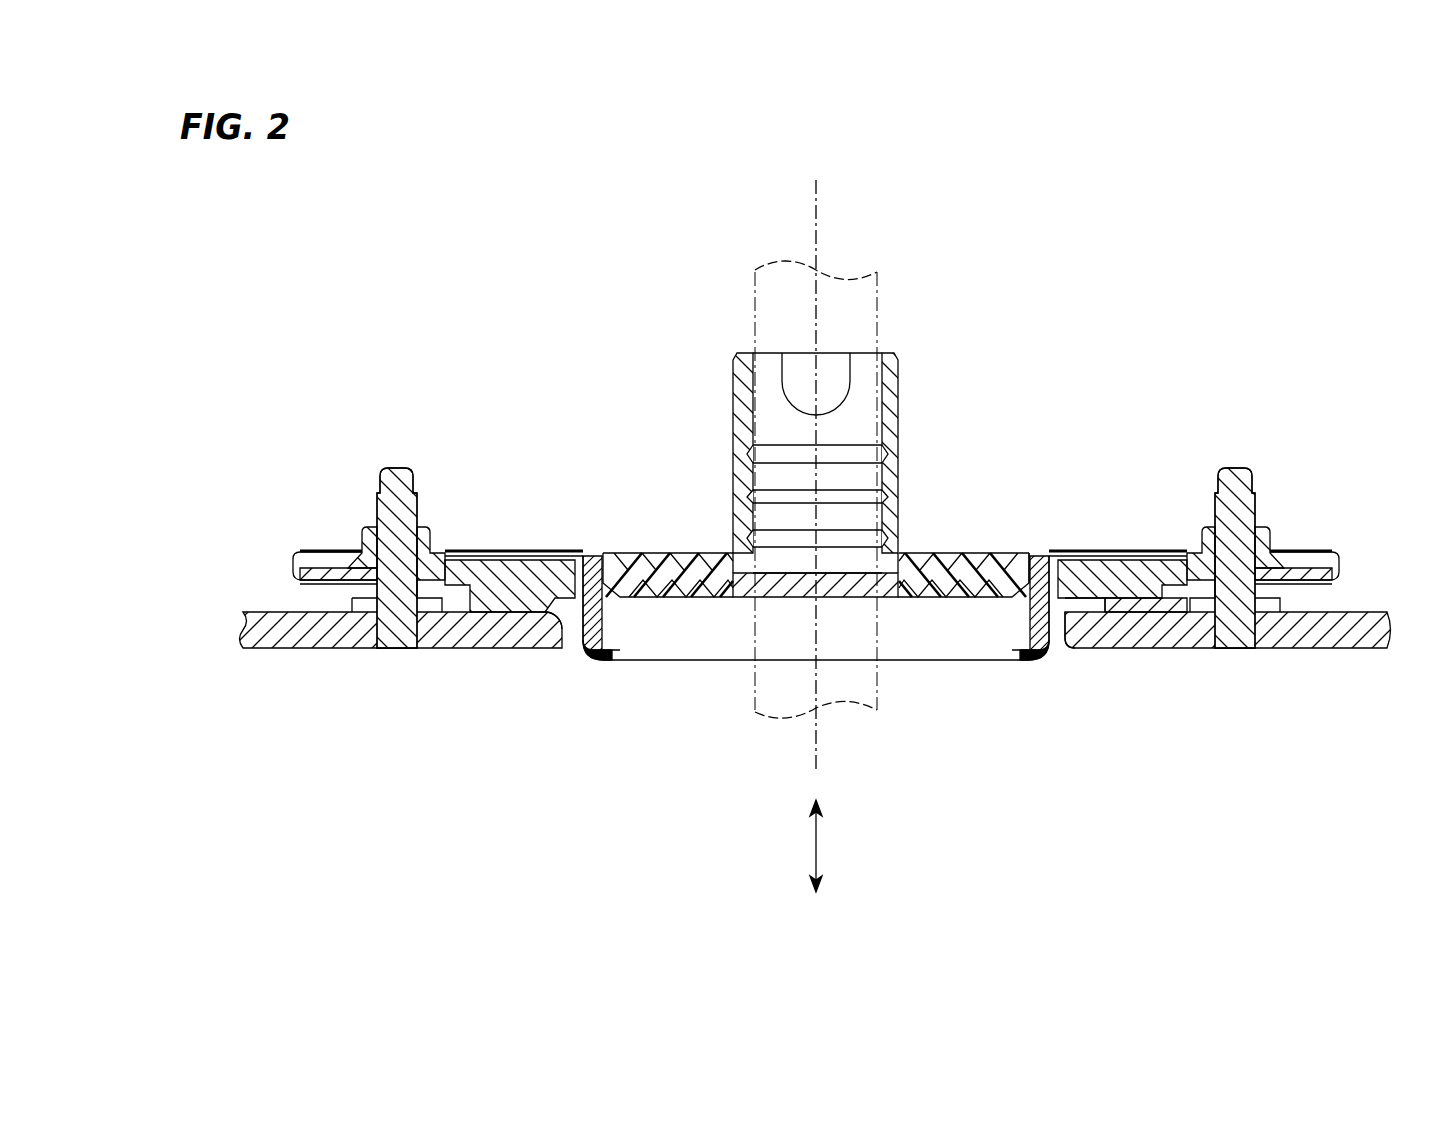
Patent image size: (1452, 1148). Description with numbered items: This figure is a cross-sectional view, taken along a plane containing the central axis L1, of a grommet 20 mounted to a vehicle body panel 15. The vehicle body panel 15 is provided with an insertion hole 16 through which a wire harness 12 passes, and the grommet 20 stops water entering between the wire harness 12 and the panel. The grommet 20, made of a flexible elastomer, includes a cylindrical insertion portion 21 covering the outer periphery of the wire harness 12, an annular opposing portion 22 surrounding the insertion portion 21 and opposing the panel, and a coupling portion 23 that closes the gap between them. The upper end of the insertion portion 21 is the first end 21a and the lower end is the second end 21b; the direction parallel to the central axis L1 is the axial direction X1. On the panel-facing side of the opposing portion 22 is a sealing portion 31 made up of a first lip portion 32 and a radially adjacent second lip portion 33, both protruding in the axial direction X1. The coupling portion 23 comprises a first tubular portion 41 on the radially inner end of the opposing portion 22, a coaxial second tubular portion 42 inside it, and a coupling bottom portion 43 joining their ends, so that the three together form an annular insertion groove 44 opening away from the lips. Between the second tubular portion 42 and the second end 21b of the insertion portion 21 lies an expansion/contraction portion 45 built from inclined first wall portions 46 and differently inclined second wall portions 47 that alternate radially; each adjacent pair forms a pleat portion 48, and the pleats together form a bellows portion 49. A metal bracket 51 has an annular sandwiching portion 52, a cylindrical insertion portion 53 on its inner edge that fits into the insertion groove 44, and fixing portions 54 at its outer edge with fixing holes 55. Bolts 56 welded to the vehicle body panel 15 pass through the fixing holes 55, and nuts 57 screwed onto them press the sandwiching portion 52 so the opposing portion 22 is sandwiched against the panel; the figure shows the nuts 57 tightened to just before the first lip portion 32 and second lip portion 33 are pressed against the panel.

The wire harness 12 is at (880, 282).
The vehicle body panel 15 is at (1345, 652).
The insertion hole 16 is at (1072, 650).
The grommet 20 is at (847, 473).
The insertion portion 21 is at (840, 473).
The first end 21a is at (770, 352).
The second end 21b is at (780, 598).
The opposing portion 22 is at (1122, 624).
The coupling portion 23 is at (1022, 552).
The sealing portion 31 is at (1176, 702).
The first lip portion 32 is at (1132, 616).
The second lip portion 33 is at (1172, 616).
The first tubular portion 41 is at (545, 630).
The second tubular portion 42 is at (820, 561).
The coupling bottom portion 43 is at (811, 636).
The insertion groove 44 is at (580, 652).
The expansion/contraction portion 45 is at (712, 598).
The first wall portion 46 is at (680, 600).
The second wall portion 47 is at (990, 618).
The pleat portion 48 is at (622, 552).
The bellows portion 49 is at (698, 553).
The bracket 51 is at (820, 549).
The sandwiching portion 52 is at (520, 556).
The insertion portion 53 is at (606, 636).
The fixing portion 54 is at (340, 568).
The fixing hole 55 is at (368, 585).
The bolt 56 is at (400, 622).
The nut 57 is at (428, 528).
The central axis L1 is at (822, 212).
The axial direction X1 is at (820, 846).